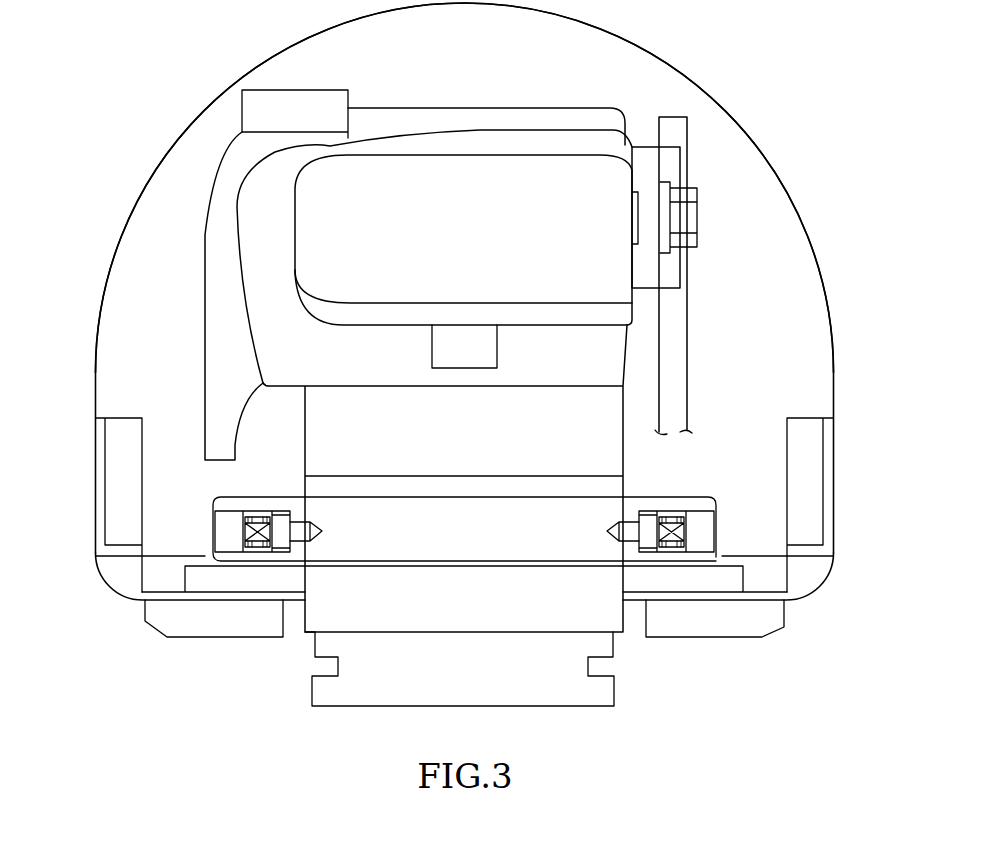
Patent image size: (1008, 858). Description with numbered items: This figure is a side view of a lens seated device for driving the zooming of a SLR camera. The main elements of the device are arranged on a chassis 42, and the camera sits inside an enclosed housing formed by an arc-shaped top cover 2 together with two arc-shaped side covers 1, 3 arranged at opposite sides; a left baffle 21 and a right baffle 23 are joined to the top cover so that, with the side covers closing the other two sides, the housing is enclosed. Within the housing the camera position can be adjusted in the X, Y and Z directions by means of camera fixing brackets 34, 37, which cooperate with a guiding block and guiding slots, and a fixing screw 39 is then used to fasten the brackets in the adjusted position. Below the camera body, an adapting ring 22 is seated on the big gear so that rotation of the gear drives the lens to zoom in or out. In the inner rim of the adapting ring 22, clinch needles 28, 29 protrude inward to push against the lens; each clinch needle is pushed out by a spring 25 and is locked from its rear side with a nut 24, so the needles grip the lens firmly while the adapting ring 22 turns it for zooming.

The arc-shaped side cover 1 is at (790, 197).
The arc-shaped top cover 2 is at (793, 194).
The arc-shaped side cover 3 is at (797, 191).
The left baffle 21 is at (98, 458).
The adapting ring 22 is at (366, 555).
The right baffle 23 is at (828, 468).
The nut 24 is at (231, 530).
The spring 25 is at (258, 545).
The clinch needle 28 is at (308, 542).
The clinch needle 29 is at (632, 533).
The camera fixing bracket 34 is at (677, 349).
The camera fixing bracket 37 is at (668, 278).
The fixing screw 39 is at (685, 210).
The chassis 42 is at (124, 571).